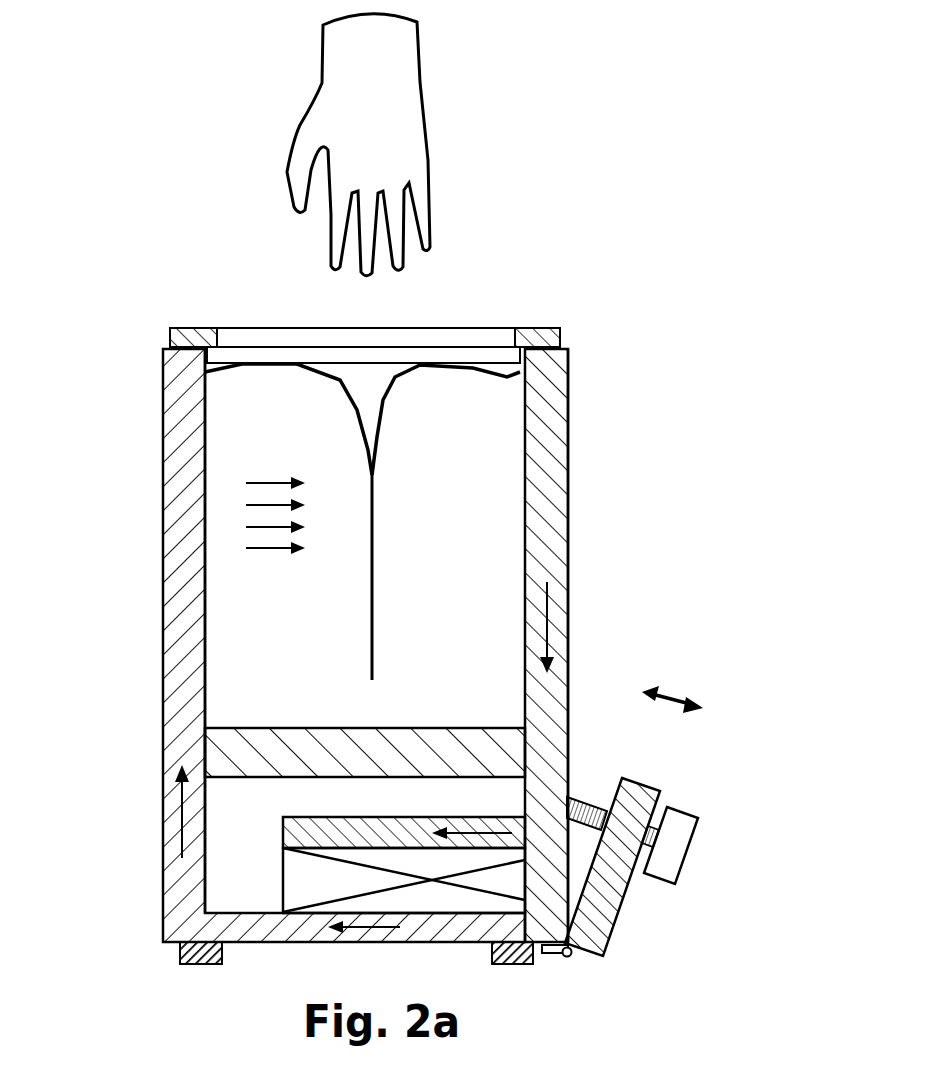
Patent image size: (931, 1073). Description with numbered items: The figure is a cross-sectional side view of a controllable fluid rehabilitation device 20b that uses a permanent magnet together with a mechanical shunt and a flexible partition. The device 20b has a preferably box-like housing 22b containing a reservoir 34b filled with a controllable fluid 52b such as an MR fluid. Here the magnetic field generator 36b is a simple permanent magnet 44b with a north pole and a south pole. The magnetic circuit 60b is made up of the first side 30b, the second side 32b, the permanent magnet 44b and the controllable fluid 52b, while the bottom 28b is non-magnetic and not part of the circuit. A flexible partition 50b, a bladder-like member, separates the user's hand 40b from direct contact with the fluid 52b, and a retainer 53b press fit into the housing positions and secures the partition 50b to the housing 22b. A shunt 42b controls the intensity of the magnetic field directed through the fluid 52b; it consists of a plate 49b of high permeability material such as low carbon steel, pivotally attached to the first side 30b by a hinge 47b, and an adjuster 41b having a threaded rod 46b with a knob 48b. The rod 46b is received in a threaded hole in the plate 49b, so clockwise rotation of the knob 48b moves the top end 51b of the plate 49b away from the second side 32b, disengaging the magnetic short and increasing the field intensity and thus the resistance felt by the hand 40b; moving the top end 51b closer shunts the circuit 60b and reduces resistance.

The controllable fluid rehabilitation device 20b is at (518, 272).
The housing 22b is at (368, 660).
The bottom 28b is at (400, 778).
The first side 30b is at (163, 462).
The second side 32b is at (570, 458).
The reservoir 34b is at (203, 600).
The magnetic field generator 36b is at (316, 914).
The hand 40b is at (388, 65).
The adjuster 41b is at (644, 772).
The shunt 42b is at (647, 867).
The permanent magnet 44b is at (445, 903).
The threaded rod 46b is at (600, 800).
The hinge 47b is at (578, 957).
The knob 48b is at (698, 820).
The plate 49b is at (627, 890).
The flexible partition 50b is at (278, 360).
The top end 51b is at (648, 826).
The controllable fluid 52b is at (474, 503).
The retainer 53b is at (170, 328).
The magnetic circuit 60b is at (585, 541).